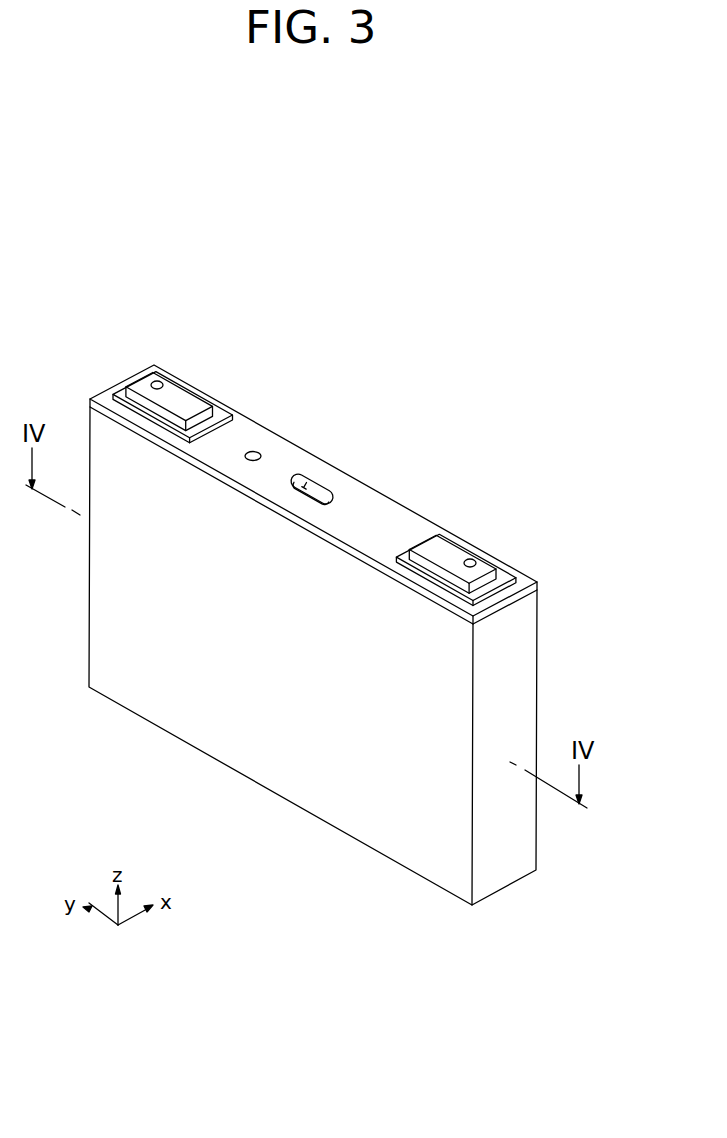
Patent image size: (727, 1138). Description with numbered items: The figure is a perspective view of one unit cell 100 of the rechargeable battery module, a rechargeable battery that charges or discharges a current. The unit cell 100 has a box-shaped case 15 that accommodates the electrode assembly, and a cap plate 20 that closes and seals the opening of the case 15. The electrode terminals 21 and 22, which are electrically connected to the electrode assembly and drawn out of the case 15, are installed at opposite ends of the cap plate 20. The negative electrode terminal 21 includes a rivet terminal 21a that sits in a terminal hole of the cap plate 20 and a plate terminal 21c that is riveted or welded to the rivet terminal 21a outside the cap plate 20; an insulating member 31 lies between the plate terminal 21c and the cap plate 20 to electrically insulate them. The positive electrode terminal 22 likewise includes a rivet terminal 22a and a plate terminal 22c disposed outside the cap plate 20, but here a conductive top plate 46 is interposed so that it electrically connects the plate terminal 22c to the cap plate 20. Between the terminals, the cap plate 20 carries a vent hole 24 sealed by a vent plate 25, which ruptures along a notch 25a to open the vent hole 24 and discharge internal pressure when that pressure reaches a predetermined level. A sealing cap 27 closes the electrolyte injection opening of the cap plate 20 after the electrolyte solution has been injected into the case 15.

The unit cell 100 is at (378, 308).
The case 15 is at (280, 764).
The cap plate 20 is at (387, 516).
The electrode terminal 21 is at (173, 368).
The rivet terminal 21a is at (151, 382).
The plate terminal 21c is at (180, 395).
The insulating member 31 is at (223, 418).
The electrode terminal 22 is at (476, 540).
The rivet terminal 22a is at (476, 561).
The plate terminal 22c is at (441, 542).
The vent hole 24 is at (300, 478).
The vent plate 25 is at (320, 481).
The notch 25a is at (323, 489).
The sealing cap 27 is at (259, 451).
The top plate 46 is at (515, 566).